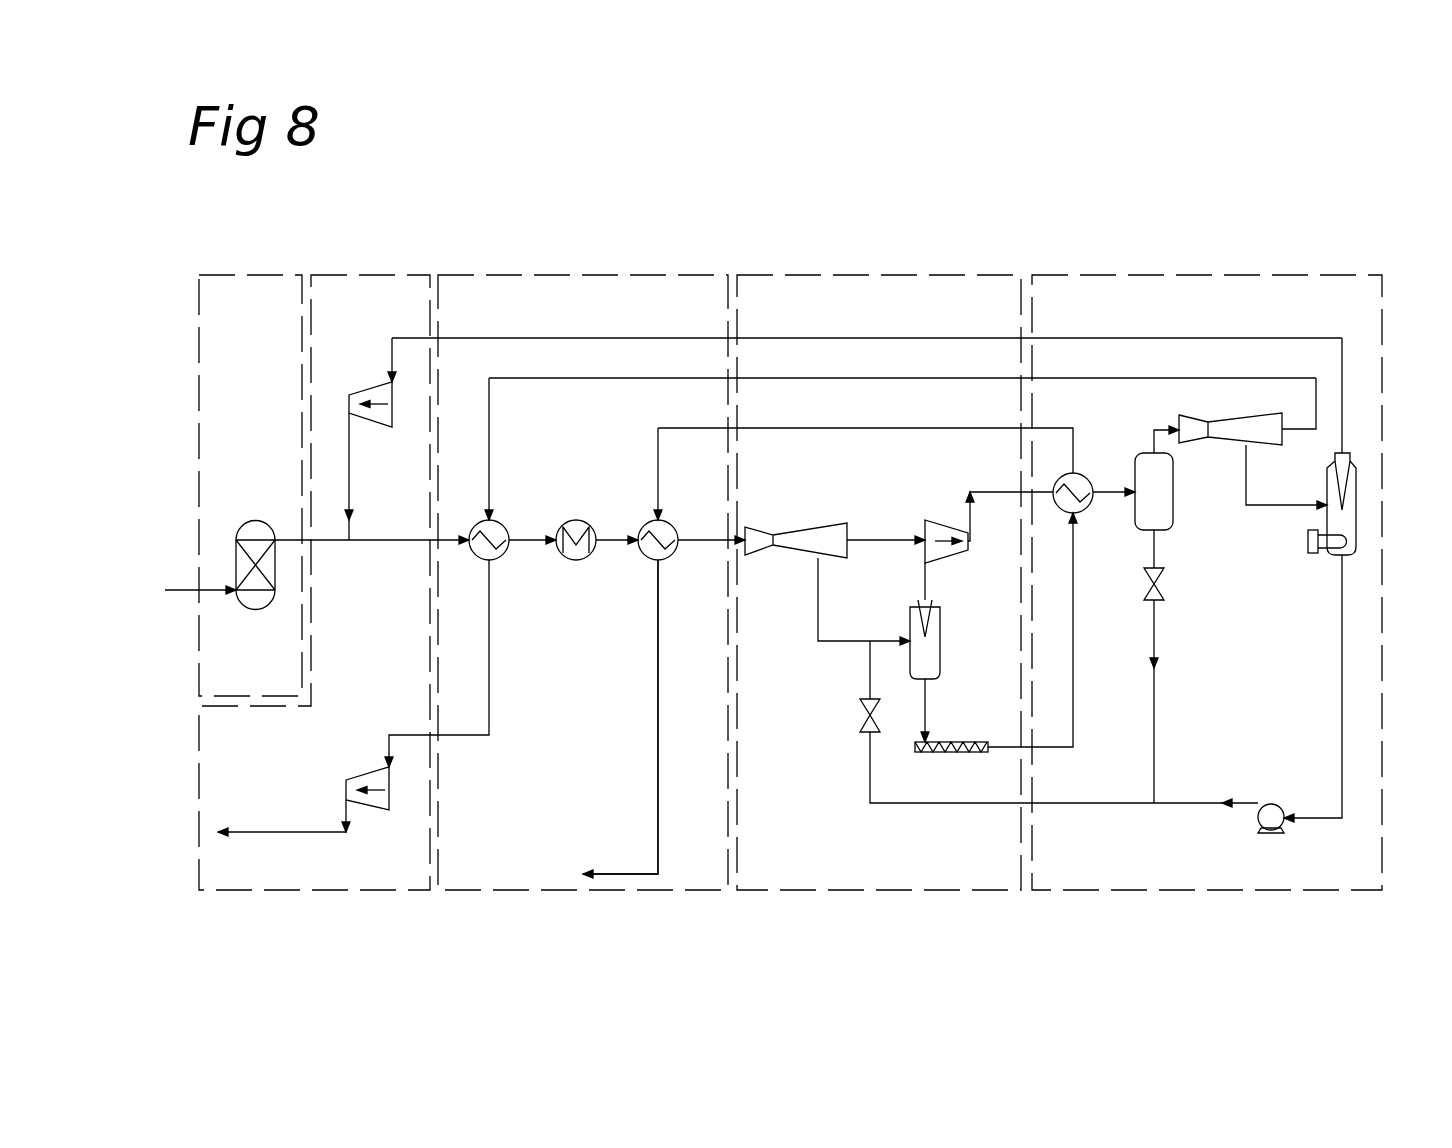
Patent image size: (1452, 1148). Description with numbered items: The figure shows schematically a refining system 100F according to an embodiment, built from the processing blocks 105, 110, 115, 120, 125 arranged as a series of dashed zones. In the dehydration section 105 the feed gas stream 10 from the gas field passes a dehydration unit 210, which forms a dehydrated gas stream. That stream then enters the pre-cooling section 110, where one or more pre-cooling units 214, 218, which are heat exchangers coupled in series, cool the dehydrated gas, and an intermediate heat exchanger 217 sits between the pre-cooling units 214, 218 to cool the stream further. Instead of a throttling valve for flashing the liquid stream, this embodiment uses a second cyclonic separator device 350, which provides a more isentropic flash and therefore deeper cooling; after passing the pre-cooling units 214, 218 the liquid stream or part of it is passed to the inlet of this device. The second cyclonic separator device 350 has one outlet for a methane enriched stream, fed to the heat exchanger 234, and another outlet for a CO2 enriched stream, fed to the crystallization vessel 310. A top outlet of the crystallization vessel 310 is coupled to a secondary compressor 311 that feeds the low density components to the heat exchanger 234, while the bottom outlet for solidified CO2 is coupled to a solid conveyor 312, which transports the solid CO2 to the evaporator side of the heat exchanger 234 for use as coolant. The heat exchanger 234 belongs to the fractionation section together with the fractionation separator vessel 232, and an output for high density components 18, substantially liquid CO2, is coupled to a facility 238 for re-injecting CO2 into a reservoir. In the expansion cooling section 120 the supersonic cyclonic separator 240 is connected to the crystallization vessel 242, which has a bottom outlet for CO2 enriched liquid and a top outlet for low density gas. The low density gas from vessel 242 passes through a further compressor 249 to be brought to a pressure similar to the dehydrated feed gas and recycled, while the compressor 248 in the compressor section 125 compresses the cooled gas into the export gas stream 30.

The refining system 100F is at (800, 238).
The dehydration section 105 is at (240, 274).
The compressor section 125 is at (350, 274).
The pre-cooling section 110 is at (618, 274).
The processing block 115 is at (887, 274).
The expansion cooling section 120 is at (1212, 274).
The feed gas stream 10 is at (183, 590).
The export gas stream 30 is at (250, 832).
The dehydration unit 210 is at (252, 605).
The further compressor 249 is at (390, 426).
The compressor 248 is at (386, 806).
The pre-cooling unit 214 is at (500, 530).
The intermediate heat exchanger 217 is at (583, 525).
The pre-cooling unit 218 is at (670, 525).
The high density components 18 is at (658, 810).
The facility for re-injecting CO2 238 is at (620, 717).
The second cyclonic separator device 350 is at (836, 530).
The secondary compressor 311 is at (940, 528).
The crystallization vessel 310 is at (930, 650).
The solid conveyor 312 is at (952, 741).
The heat exchanger 234 is at (1086, 506).
The fractionation separator vessel 232 is at (1147, 465).
The supersonic cyclonic separator 240 is at (1240, 432).
The crystallization vessel 242 is at (1330, 497).